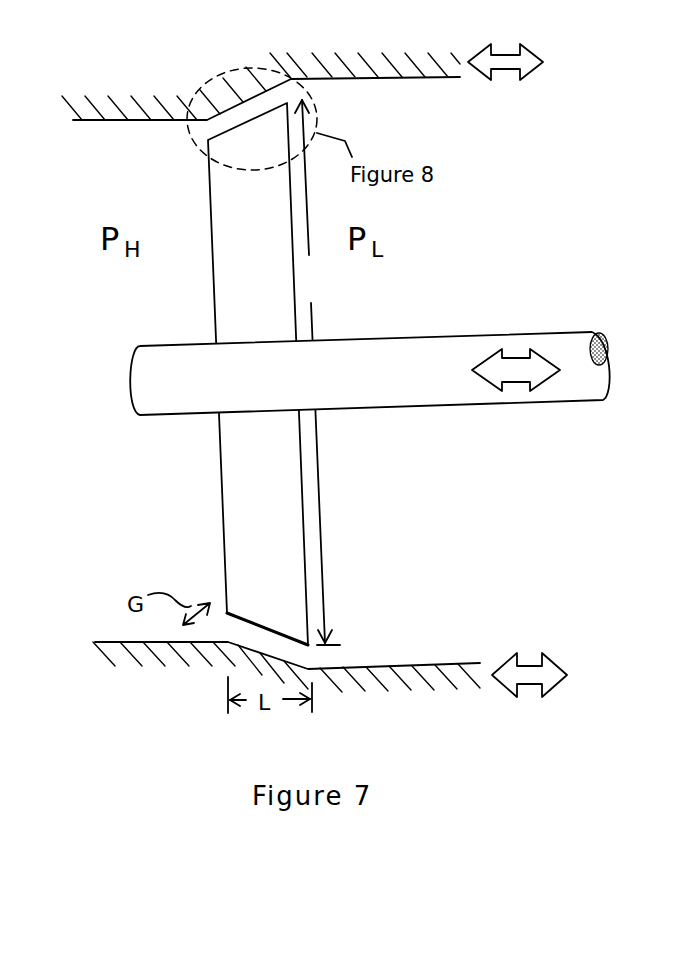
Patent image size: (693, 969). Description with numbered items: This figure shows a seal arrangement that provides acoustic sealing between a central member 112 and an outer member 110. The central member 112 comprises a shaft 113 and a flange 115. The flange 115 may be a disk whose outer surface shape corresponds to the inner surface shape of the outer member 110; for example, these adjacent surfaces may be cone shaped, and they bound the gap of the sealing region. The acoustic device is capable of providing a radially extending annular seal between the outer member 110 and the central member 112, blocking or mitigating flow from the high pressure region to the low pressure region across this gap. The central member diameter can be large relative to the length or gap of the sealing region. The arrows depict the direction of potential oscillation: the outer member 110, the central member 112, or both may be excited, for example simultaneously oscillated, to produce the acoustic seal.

The outer member 110 is at (157, 84).
The central member 112 is at (434, 293).
The shaft 113 is at (433, 408).
The flange 115 is at (223, 528).